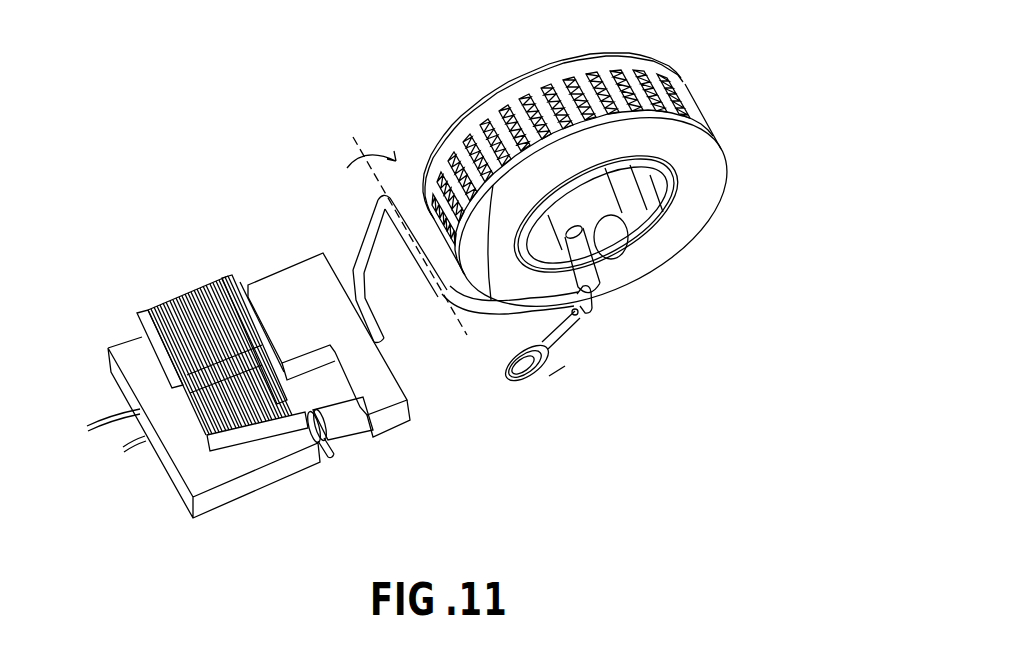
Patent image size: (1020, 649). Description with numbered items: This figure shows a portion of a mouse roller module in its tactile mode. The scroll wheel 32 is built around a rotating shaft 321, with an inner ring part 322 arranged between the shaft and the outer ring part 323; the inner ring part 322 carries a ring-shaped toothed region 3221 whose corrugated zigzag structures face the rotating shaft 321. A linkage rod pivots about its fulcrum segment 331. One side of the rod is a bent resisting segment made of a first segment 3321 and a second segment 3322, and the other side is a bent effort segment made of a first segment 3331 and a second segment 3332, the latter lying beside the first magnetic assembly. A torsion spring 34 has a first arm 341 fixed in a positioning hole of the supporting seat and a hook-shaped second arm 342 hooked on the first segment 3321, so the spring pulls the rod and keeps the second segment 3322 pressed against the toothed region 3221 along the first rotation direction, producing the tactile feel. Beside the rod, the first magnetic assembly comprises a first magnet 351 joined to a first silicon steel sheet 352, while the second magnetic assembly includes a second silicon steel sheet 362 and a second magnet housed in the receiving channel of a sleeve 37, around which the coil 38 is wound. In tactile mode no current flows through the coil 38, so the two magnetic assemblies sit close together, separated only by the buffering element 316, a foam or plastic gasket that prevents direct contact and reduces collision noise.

The scroll wheel 32 is at (535, 67).
The inner ring part 322 is at (657, 158).
The outer ring part 323 is at (702, 172).
The toothed region 3221 is at (673, 248).
The rotating shaft 321 is at (617, 250).
The first segment of the resisting segment 3321 is at (460, 152).
The second segment of the resisting segment 3322 is at (582, 322).
The fulcrum segment 331 is at (410, 249).
The first segment of the effort segment 3331 is at (368, 232).
The second segment of the effort segment 3332 is at (362, 307).
The torsion spring 34 is at (507, 373).
The first arm 341 is at (565, 360).
The second arm 342 is at (553, 358).
The sleeve 37 is at (228, 270).
The coil 38 is at (193, 308).
The buffering element 316 is at (262, 300).
The first silicon steel sheet 352 is at (299, 290).
The first magnet 351 is at (345, 427).
The second silicon steel sheet 362 is at (220, 468).